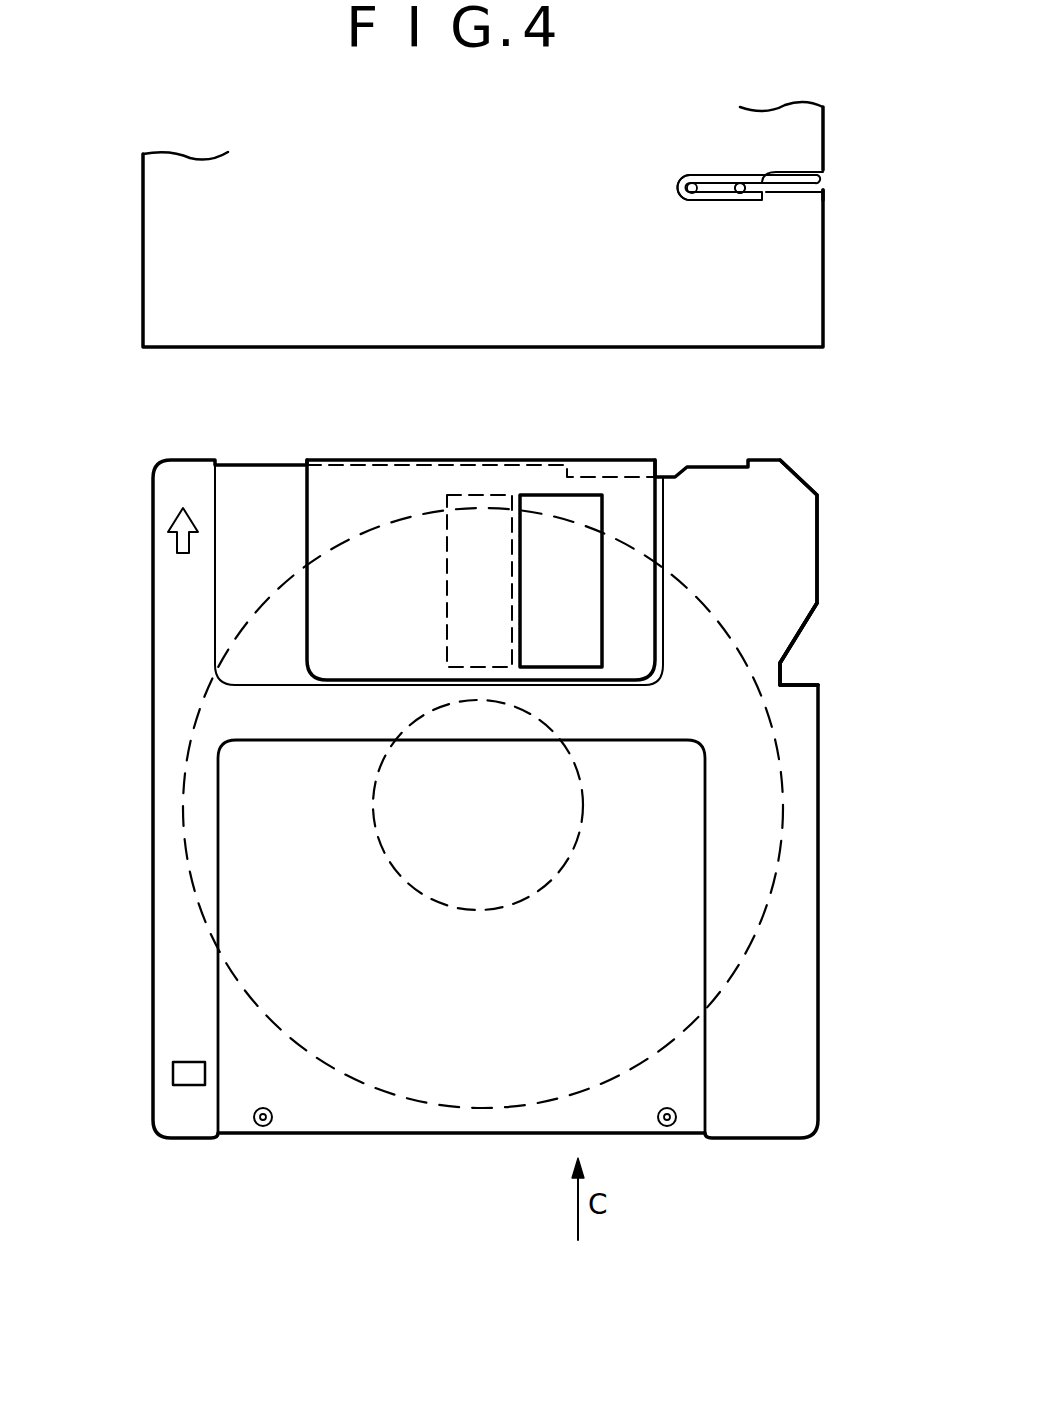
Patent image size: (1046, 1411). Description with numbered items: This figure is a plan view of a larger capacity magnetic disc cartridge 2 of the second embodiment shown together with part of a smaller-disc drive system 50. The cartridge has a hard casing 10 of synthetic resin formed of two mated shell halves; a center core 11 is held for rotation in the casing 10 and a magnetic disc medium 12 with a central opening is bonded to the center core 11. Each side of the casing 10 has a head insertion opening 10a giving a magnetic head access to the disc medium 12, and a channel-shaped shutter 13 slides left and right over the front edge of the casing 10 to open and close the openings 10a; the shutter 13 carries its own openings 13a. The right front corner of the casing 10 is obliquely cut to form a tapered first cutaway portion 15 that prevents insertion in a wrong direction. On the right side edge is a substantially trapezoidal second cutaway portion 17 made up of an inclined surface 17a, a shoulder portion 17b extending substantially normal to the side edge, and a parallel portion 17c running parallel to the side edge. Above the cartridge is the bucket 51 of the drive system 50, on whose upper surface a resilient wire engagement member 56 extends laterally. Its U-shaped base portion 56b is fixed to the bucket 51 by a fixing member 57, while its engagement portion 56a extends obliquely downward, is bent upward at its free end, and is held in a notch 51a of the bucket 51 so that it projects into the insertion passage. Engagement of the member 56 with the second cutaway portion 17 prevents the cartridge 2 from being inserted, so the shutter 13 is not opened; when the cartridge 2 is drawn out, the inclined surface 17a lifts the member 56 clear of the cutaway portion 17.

The magnetic disc cartridge 2 is at (118, 494).
The hard casing 10 is at (138, 670).
The head insertion opening 10a is at (452, 498).
The center core 11 is at (430, 870).
The magnetic disc medium 12 is at (186, 896).
The shutter 13 is at (399, 450).
The shutter opening 13a is at (528, 525).
The first cutaway portion 15 is at (809, 490).
The second cutaway portion 17 is at (820, 650).
The inclined surface 17a is at (810, 622).
The shoulder portion 17b is at (805, 687).
The parallel portion 17c is at (748, 660).
The smaller-disc drive system 50 is at (132, 291).
The bucket 51 is at (824, 300).
The notch 51a is at (793, 194).
The engagement member 56 is at (714, 164).
The engagement portion 56a is at (806, 172).
The U-shaped base portion 56b is at (688, 201).
The fixing member 57 is at (740, 196).